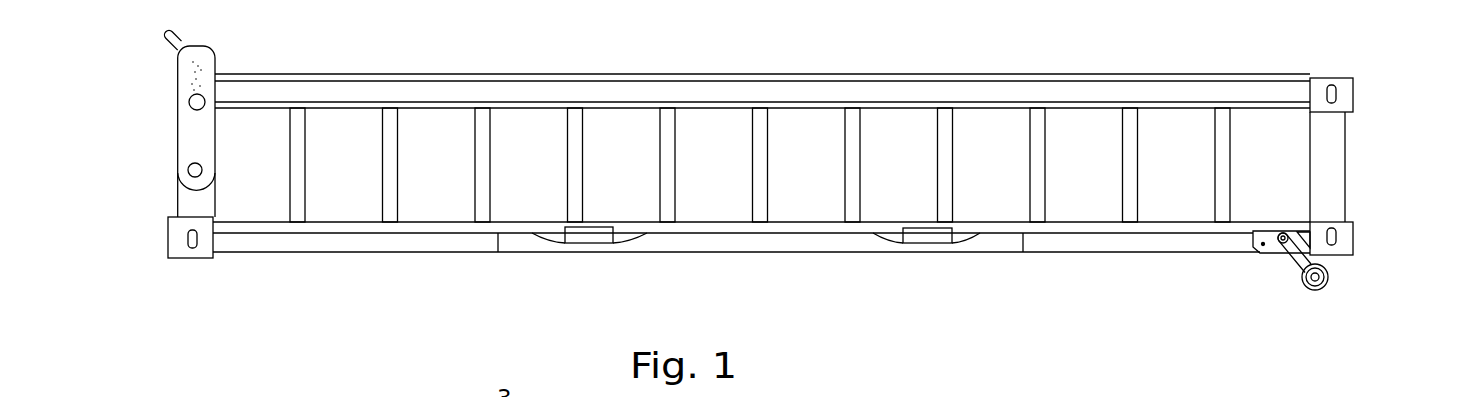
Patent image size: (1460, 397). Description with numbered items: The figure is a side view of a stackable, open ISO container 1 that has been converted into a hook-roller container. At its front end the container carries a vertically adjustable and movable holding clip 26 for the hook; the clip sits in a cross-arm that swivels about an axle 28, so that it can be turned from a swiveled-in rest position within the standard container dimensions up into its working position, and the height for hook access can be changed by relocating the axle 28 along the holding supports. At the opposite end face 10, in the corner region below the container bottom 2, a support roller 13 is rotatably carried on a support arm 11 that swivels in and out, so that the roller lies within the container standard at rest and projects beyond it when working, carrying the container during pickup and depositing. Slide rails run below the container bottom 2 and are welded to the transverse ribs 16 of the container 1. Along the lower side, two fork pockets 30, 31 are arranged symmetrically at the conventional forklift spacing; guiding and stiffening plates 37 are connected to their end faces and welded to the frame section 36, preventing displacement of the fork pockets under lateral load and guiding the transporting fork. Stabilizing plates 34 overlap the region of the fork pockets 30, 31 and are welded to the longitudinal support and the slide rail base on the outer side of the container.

The ISO container 1 is at (223, 298).
The container bottom 2 is at (350, 227).
The end face 10 is at (1335, 137).
The support arm 11 is at (1312, 253).
The support roller 13 is at (1328, 277).
The transverse rib 16 is at (482, 222).
The holding clip 26 is at (168, 47).
The axle 28 is at (198, 176).
The fork pocket 30 is at (585, 238).
The fork pocket 31 is at (925, 237).
The stabilizing plate 34 is at (710, 242).
The frame section 36 is at (1078, 228).
The guiding and stiffening plate 37 is at (618, 238).